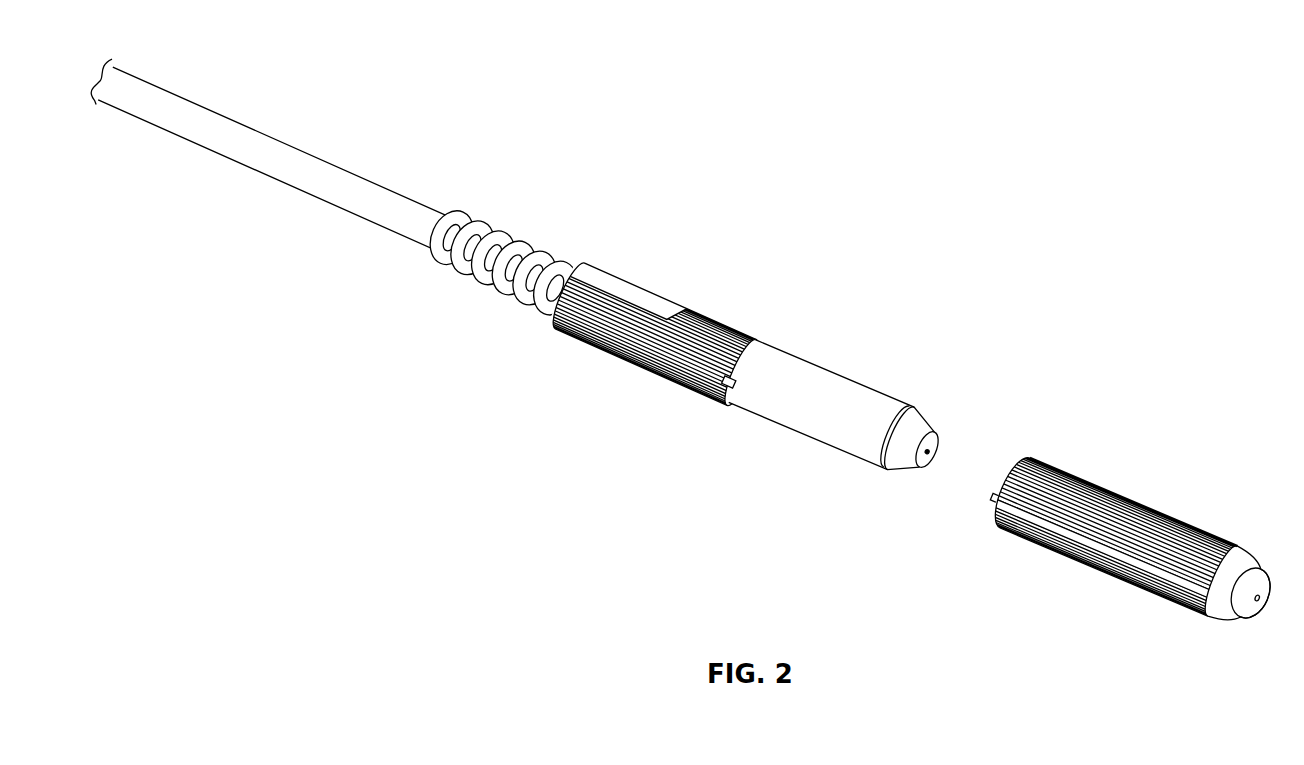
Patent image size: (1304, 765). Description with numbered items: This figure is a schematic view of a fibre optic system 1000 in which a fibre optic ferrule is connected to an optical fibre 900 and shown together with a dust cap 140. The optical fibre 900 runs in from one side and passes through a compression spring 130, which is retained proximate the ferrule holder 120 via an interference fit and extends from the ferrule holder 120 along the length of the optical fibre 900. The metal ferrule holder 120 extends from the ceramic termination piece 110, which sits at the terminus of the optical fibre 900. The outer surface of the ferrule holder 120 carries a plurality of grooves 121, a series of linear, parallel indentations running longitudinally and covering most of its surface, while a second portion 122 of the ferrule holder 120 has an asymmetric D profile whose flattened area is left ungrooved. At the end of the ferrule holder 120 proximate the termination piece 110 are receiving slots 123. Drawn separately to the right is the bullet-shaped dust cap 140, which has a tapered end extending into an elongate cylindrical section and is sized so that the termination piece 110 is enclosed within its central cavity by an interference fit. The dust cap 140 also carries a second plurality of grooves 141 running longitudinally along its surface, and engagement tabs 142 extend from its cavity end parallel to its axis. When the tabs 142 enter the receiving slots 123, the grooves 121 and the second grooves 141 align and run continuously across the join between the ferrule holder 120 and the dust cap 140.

The fibre optic system 1000 is at (517, 271).
The optical fibre 900 is at (308, 163).
The compression spring 130 is at (502, 233).
The ferrule holder 120 is at (703, 302).
The second portion of the ferrule holder 122 is at (625, 285).
The plurality of grooves 121 is at (760, 327).
The receiving slots 123 is at (728, 405).
The termination piece 110 is at (855, 395).
The dust cap 140 is at (1132, 516).
The second plurality of grooves 141 is at (1113, 534).
The engagement tabs 142 is at (1032, 457).